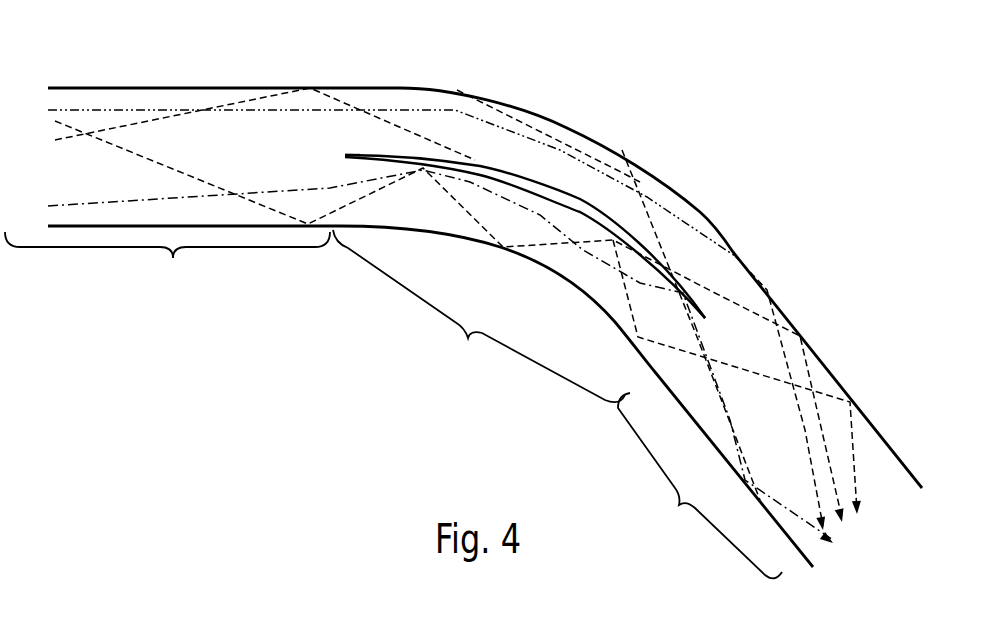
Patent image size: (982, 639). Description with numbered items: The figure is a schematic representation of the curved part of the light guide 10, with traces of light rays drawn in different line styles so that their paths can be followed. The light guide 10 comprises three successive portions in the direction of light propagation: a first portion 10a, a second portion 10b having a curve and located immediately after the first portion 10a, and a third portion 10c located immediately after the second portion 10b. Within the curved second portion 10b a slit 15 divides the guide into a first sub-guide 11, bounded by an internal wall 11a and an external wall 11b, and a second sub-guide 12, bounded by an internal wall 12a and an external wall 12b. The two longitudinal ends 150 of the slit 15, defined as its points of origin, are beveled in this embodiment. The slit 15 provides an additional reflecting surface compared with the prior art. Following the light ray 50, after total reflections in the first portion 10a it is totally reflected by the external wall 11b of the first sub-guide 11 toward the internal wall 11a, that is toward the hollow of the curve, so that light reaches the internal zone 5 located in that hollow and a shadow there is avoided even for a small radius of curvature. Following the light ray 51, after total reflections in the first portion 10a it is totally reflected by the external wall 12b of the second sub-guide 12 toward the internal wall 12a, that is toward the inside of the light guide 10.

The internal zone 5 is at (495, 260).
The light guide 10 is at (485, 327).
The first portion 10a is at (167, 264).
The second portion 10b is at (479, 316).
The third portion 10c is at (700, 485).
The first sub-guide 11 is at (520, 203).
The internal wall of the first sub-guide 11a is at (543, 272).
The external wall of the first sub-guide 11b is at (477, 173).
The second sub-guide 12 is at (697, 268).
The internal wall of the second sub-guide 12a is at (548, 187).
The external wall of the second sub-guide 12b is at (678, 192).
The slit 15 is at (578, 195).
The light ray 50 is at (208, 185).
The light ray 51 is at (341, 98).
The longitudinal end of the slit 150 is at (365, 149).